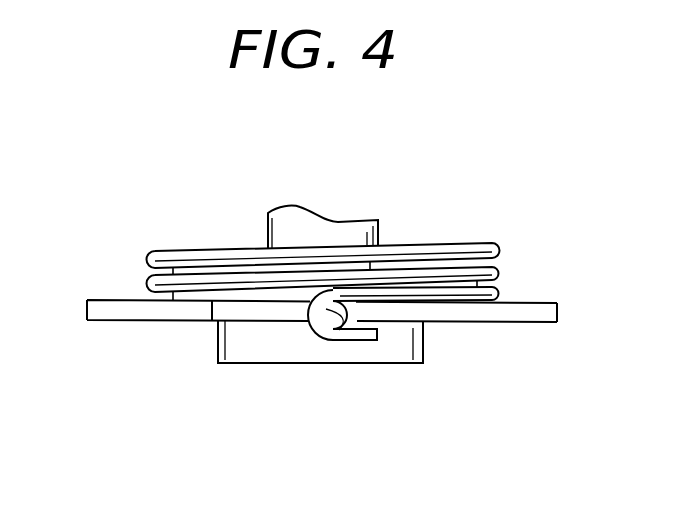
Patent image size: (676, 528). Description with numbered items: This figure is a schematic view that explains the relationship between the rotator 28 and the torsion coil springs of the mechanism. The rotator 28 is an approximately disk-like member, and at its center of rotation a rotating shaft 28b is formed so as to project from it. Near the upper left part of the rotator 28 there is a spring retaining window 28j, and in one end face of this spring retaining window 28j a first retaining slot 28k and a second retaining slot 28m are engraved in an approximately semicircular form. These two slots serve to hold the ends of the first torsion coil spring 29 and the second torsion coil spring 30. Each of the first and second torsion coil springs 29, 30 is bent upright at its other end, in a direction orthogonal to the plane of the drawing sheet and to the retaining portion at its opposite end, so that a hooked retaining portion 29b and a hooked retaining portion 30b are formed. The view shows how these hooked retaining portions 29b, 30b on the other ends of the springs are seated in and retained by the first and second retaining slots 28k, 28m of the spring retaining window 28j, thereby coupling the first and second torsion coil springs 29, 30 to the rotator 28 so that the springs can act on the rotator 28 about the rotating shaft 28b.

The rotator 28 is at (322, 295).
The rotating shaft 28b is at (298, 218).
The spring retaining window 28j is at (248, 312).
The first retaining slot 28k is at (340, 314).
The second retaining slot 28m is at (320, 393).
The first torsion coil spring 29 is at (333, 287).
The second torsion coil spring 30 is at (333, 287).
The retaining portion 29b is at (362, 335).
The retaining portion 30b is at (384, 365).